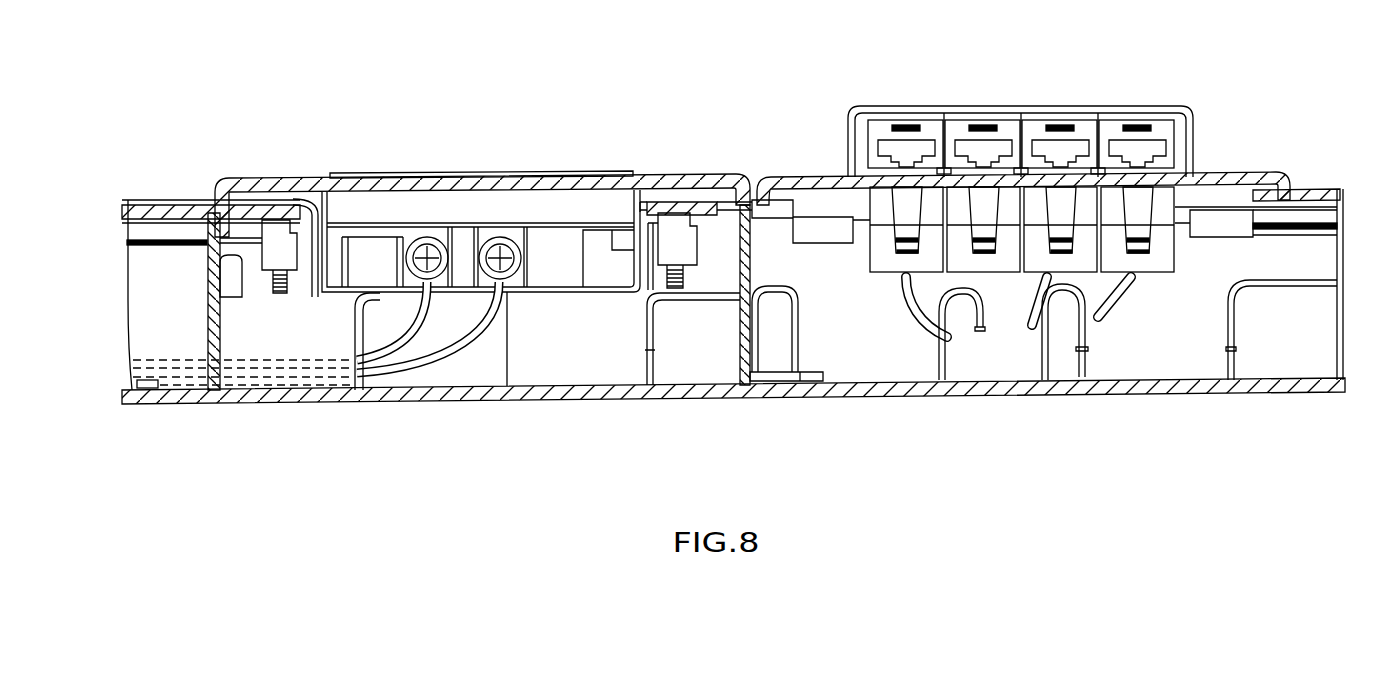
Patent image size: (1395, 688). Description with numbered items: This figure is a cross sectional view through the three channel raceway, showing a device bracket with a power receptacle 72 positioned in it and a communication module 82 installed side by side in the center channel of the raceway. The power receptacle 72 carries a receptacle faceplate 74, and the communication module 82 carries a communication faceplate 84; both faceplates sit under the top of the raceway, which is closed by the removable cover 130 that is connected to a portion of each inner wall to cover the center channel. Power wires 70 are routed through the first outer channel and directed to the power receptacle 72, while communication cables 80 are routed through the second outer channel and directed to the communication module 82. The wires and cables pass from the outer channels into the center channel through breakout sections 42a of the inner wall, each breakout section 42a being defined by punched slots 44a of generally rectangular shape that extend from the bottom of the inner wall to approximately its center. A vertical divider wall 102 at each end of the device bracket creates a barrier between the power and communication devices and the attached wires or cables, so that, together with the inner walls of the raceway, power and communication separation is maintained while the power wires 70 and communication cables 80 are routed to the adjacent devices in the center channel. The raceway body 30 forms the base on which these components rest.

The base plate 30 is at (878, 397).
The removable cover 130 is at (170, 202).
The vertical divider wall 102 is at (207, 342).
The receptacle faceplate 74 is at (672, 167).
The power receptacle 72 is at (573, 167).
The power wires 70 is at (427, 373).
The breakout section 42a is at (682, 350).
The punched slot 44a is at (650, 308).
The communication faceplate 84 is at (1237, 170).
The communication module 82 is at (1160, 123).
The communication cables 80 is at (1115, 307).